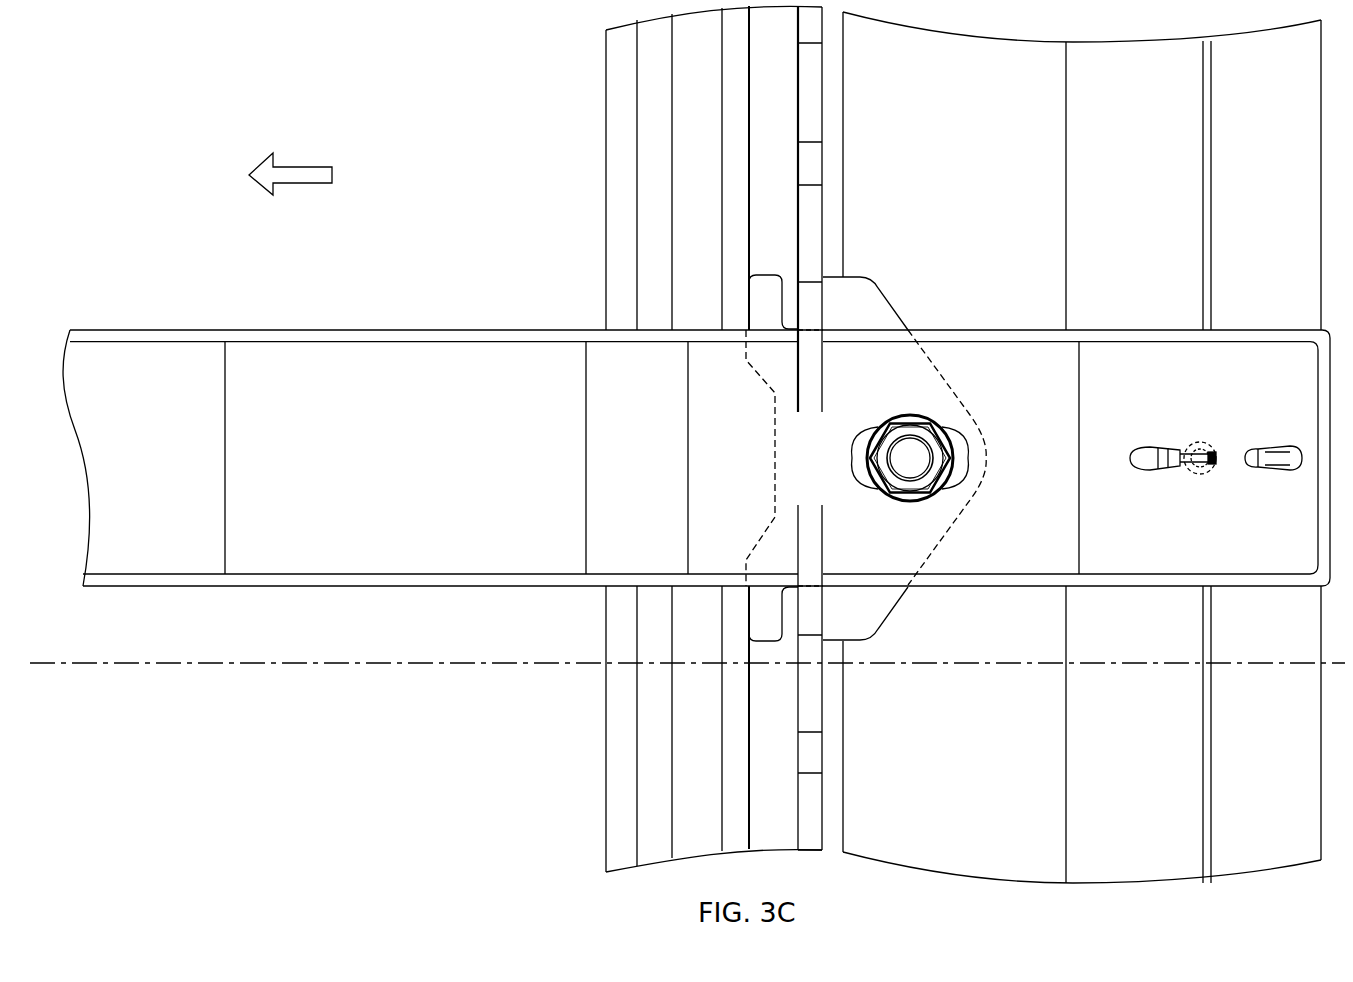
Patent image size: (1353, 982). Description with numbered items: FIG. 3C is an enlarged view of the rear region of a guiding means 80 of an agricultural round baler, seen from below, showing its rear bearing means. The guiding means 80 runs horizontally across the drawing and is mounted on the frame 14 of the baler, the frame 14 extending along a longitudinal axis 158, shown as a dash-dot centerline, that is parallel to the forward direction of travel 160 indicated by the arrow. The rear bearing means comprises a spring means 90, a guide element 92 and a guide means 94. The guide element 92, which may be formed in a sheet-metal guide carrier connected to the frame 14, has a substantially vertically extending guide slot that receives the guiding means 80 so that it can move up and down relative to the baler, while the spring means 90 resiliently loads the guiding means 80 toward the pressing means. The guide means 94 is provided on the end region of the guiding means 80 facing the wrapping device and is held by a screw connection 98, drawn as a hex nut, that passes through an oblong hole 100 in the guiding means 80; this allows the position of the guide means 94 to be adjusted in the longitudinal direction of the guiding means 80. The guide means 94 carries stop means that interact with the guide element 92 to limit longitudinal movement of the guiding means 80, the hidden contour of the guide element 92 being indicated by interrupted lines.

The frame 14 is at (1148, 131).
The guiding means 80 is at (341, 468).
The spring means 90 is at (1206, 494).
The guide element 92 is at (812, 303).
The guide means 94 is at (762, 304).
The screw connection 98 is at (930, 424).
The oblong hole 100 is at (965, 461).
The longitudinal axis 158 is at (244, 663).
The forward direction of travel 160 is at (305, 177).